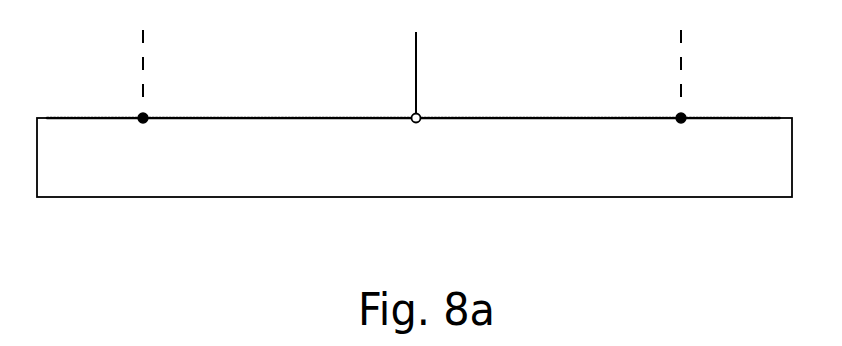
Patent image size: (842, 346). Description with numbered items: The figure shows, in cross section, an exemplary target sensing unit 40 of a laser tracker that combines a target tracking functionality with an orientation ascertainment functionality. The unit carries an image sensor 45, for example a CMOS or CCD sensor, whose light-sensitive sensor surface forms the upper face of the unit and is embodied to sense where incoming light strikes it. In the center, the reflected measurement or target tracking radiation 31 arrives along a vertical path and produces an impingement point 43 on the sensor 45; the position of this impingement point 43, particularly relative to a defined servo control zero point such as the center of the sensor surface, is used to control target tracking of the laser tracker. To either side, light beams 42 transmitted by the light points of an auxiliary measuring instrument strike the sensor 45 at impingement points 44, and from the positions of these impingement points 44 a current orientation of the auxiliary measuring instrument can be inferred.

The target sensing unit 40 is at (257, 185).
The image sensor 45 is at (274, 117).
The light beams 42 is at (141, 44).
The impingement points 44 is at (139, 113).
The target tracking radiation 31 is at (415, 65).
The impingement point 43 is at (412, 113).